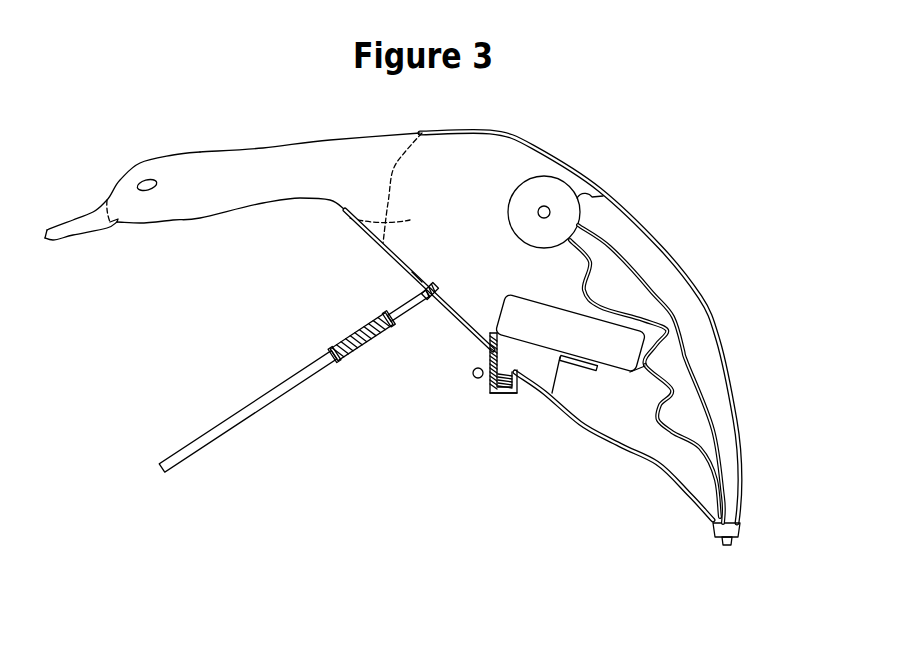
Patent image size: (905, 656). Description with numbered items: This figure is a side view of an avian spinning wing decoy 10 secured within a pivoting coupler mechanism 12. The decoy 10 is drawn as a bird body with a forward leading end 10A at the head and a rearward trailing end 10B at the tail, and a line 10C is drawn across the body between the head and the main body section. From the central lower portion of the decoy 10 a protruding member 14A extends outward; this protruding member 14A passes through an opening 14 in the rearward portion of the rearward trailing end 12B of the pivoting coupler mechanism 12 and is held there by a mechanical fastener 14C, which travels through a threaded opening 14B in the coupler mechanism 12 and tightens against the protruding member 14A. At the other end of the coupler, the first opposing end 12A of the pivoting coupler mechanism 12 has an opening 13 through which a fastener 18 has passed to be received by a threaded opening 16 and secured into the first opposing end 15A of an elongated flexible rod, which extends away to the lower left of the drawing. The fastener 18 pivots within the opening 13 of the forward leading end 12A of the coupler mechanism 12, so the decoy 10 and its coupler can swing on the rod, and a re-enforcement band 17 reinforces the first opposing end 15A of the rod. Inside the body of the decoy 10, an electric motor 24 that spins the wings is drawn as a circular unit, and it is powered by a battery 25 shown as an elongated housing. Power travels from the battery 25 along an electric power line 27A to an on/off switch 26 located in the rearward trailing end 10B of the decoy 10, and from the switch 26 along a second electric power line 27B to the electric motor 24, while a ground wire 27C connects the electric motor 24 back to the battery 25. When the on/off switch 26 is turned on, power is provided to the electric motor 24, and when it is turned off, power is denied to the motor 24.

The avian spinning wing decoy 10 is at (348, 216).
The forward leading end 10A is at (83, 220).
The rearward trailing end 10B is at (713, 524).
The head/body divider 10C is at (393, 170).
The pivoting coupler mechanism 12 is at (468, 336).
The first opposing end 12A is at (422, 292).
The rearward trailing end 12B is at (520, 397).
The opening 13 is at (418, 296).
The opening 14 is at (480, 365).
The protruding member 14A is at (502, 397).
The threaded opening 14B is at (487, 380).
The mechanical fastener 14C is at (473, 374).
The first opposing end 15A is at (323, 377).
The threaded opening 16 is at (340, 347).
The re-enforcement band 17 is at (370, 322).
The fastener 18 is at (383, 313).
The electric motor 24 is at (522, 208).
The battery 25 is at (547, 313).
The on/off switch 26 is at (722, 541).
The electric power line 27A is at (663, 420).
The electric power line 27B is at (610, 247).
The ground wire 27C is at (623, 310).